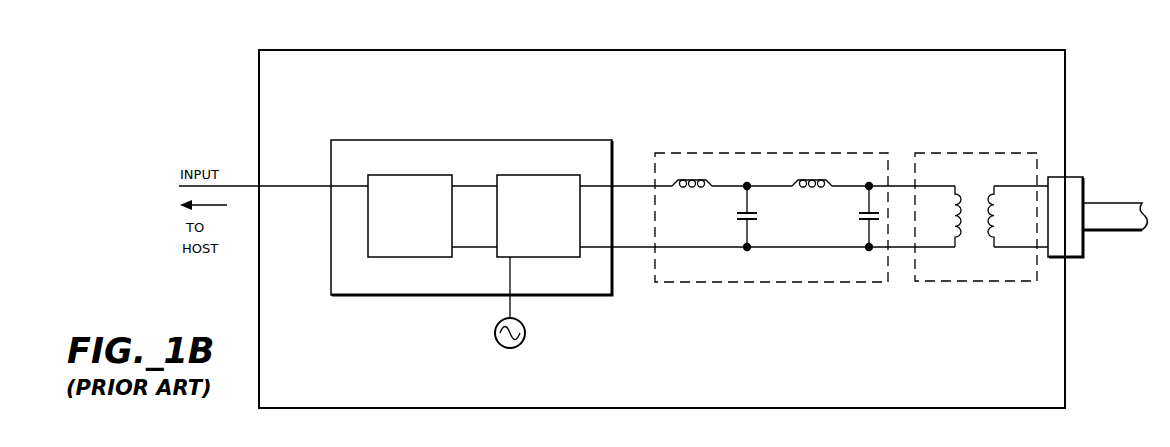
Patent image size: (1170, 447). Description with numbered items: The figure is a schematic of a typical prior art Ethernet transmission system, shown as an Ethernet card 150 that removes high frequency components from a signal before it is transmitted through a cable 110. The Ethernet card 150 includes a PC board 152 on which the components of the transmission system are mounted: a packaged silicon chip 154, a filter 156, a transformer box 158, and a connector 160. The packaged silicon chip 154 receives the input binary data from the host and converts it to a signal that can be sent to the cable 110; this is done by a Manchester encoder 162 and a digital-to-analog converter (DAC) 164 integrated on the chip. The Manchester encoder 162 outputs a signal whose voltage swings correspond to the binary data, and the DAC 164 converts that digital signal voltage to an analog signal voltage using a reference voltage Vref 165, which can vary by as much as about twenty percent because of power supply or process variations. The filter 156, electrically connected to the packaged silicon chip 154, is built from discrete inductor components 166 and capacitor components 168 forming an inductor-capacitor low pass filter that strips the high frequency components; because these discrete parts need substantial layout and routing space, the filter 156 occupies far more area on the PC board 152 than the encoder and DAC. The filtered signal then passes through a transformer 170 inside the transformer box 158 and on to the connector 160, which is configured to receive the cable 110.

The Ethernet card 150 is at (241, 88).
The PC board 152 is at (1067, 93).
The packaged silicon chip 154 is at (388, 174).
The filter 156 is at (722, 152).
The transformer box 158 is at (943, 152).
The connector 160 is at (1077, 188).
The cable 110 is at (1100, 221).
The Manchester encoder 162 is at (428, 243).
The digital-to-analog converter (DAC) 164 is at (514, 174).
The reference voltage Vref 165 is at (497, 325).
The inductor components 166 is at (686, 173).
The capacitor components 168 is at (768, 217).
The transformer 170 is at (975, 244).